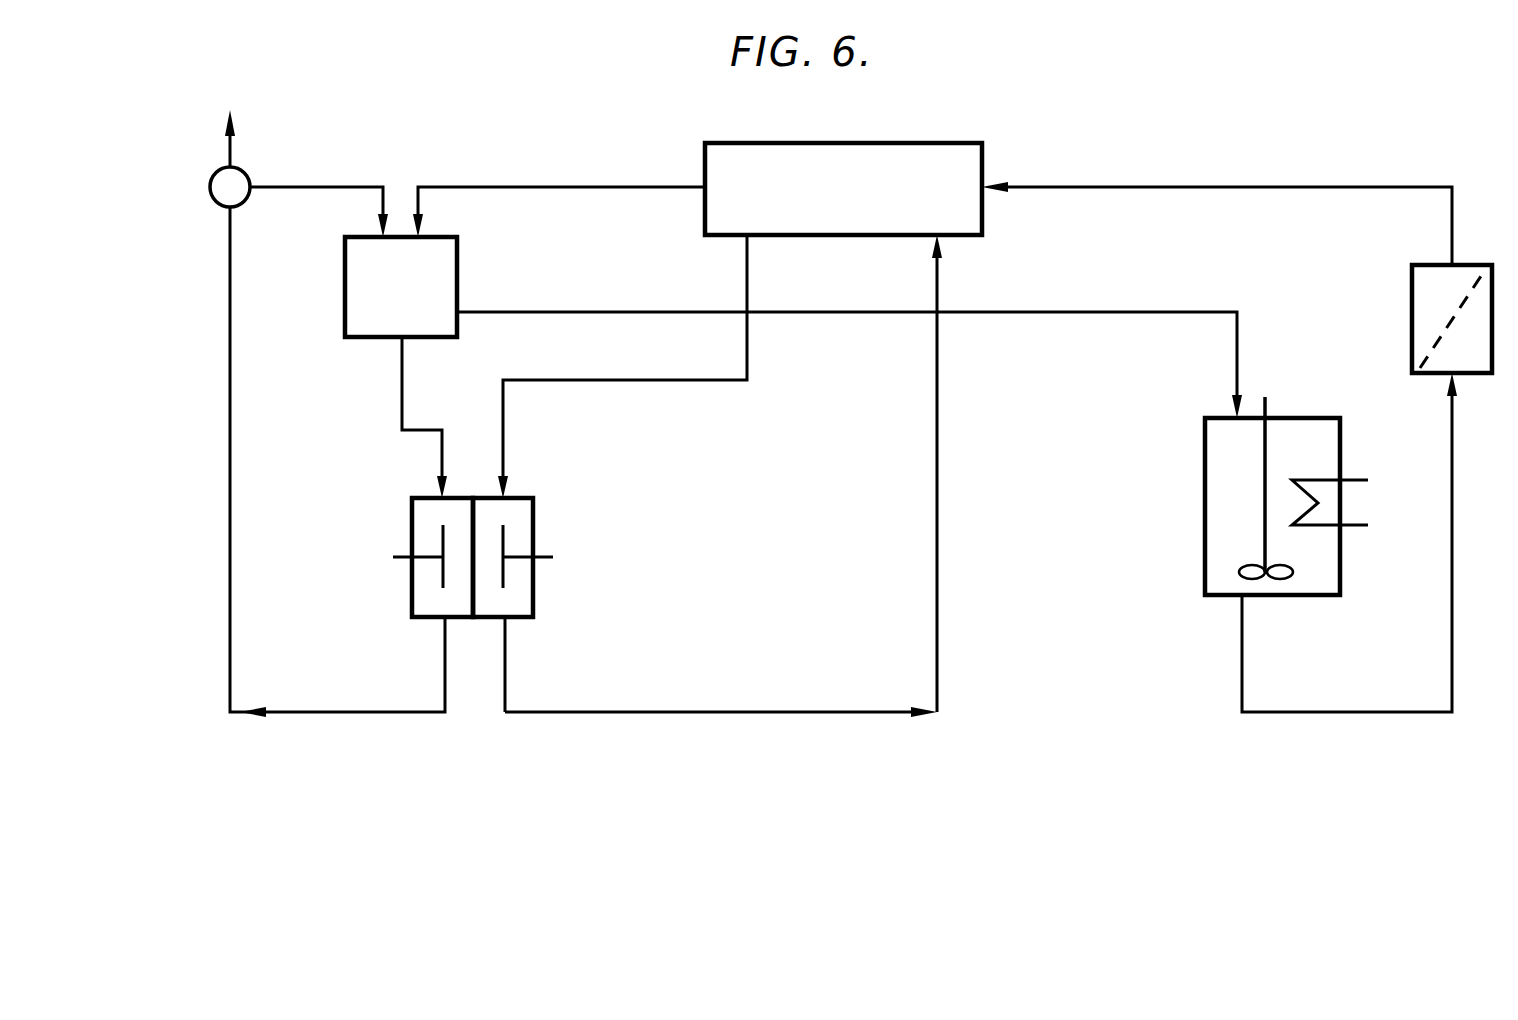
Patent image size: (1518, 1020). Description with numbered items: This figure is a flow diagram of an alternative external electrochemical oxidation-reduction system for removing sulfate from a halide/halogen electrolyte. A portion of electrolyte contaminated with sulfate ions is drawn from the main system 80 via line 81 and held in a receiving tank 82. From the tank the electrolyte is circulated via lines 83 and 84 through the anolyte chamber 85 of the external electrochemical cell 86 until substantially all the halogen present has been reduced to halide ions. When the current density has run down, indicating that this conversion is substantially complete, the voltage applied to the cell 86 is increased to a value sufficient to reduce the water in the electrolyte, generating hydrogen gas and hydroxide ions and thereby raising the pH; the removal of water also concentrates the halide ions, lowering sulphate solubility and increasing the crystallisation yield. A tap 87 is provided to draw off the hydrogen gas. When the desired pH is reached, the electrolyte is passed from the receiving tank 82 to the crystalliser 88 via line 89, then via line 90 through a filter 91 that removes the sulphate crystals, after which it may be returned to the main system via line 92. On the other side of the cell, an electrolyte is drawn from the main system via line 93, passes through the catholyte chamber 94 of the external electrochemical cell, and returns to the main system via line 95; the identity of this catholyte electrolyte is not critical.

The main system 80 is at (880, 143).
The line 81 is at (557, 186).
The receiving tank 82 is at (345, 262).
The line 83 is at (402, 375).
The line 84 is at (230, 450).
The anolyte chamber 85 is at (425, 510).
The external electrochemical cell 86 is at (518, 498).
The tap 87 is at (213, 200).
The crystalliser 88 is at (1205, 432).
The line 89 is at (1060, 311).
The line 90 is at (1335, 712).
The filter 91 is at (1412, 322).
The line 92 is at (1242, 186).
The line 93 is at (572, 380).
The catholyte chamber 94 is at (518, 603).
The line 95 is at (632, 712).